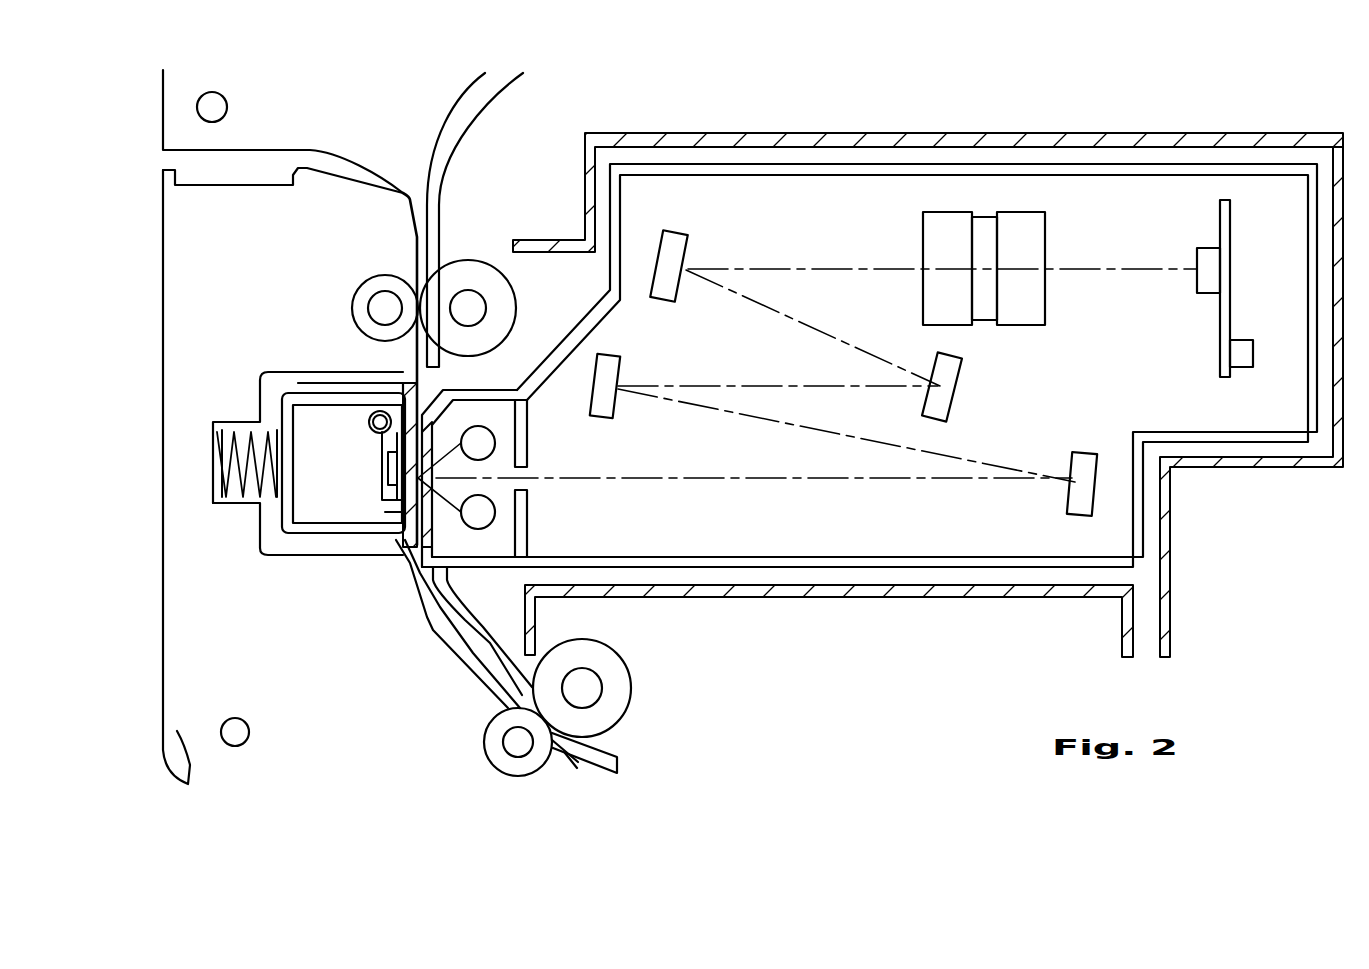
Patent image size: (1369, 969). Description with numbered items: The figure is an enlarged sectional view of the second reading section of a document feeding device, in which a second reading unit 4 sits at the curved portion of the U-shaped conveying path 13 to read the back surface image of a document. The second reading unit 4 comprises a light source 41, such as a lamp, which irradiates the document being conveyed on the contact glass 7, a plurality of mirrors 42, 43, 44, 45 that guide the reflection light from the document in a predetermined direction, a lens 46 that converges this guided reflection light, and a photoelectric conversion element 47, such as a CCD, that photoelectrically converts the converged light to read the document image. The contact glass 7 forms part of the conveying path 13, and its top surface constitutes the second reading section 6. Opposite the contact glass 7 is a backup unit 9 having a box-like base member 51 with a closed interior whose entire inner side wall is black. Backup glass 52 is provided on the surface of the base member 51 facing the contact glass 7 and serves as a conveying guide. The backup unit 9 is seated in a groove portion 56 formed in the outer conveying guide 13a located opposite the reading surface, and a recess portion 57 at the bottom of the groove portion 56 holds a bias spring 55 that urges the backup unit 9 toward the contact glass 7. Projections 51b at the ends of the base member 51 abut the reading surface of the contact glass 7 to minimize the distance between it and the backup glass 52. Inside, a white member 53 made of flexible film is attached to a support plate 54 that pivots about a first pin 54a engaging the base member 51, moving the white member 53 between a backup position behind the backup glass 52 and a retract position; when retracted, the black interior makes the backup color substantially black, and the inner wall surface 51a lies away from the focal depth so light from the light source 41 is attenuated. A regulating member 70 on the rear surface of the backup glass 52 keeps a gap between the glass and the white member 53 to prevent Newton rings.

The second reading unit 4 is at (1014, 106).
The second reading section 6 is at (446, 518).
The contact glass 7 is at (517, 417).
The backup unit 9 is at (267, 382).
The conveying path 13 is at (443, 137).
The outer conveying guide 13a is at (415, 235).
The light source 41 is at (485, 443).
The mirror 42 is at (1075, 503).
The mirror 43 is at (612, 367).
The mirror 44 is at (950, 387).
The mirror 45 is at (682, 235).
The lens 46 is at (1035, 245).
The photoelectric conversion element 47 is at (1207, 287).
The base member 51 is at (278, 412).
The inner wall surface 51a is at (293, 492).
The projections 51b is at (425, 436).
The backup glass 52 is at (373, 383).
The white member 53 is at (385, 475).
The support plate 54 is at (382, 458).
The first pin 54a is at (378, 418).
The bias spring 55 is at (222, 473).
The groove portion 56 is at (284, 553).
The recess portion 57 is at (230, 505).
The regulating member 70 is at (398, 513).